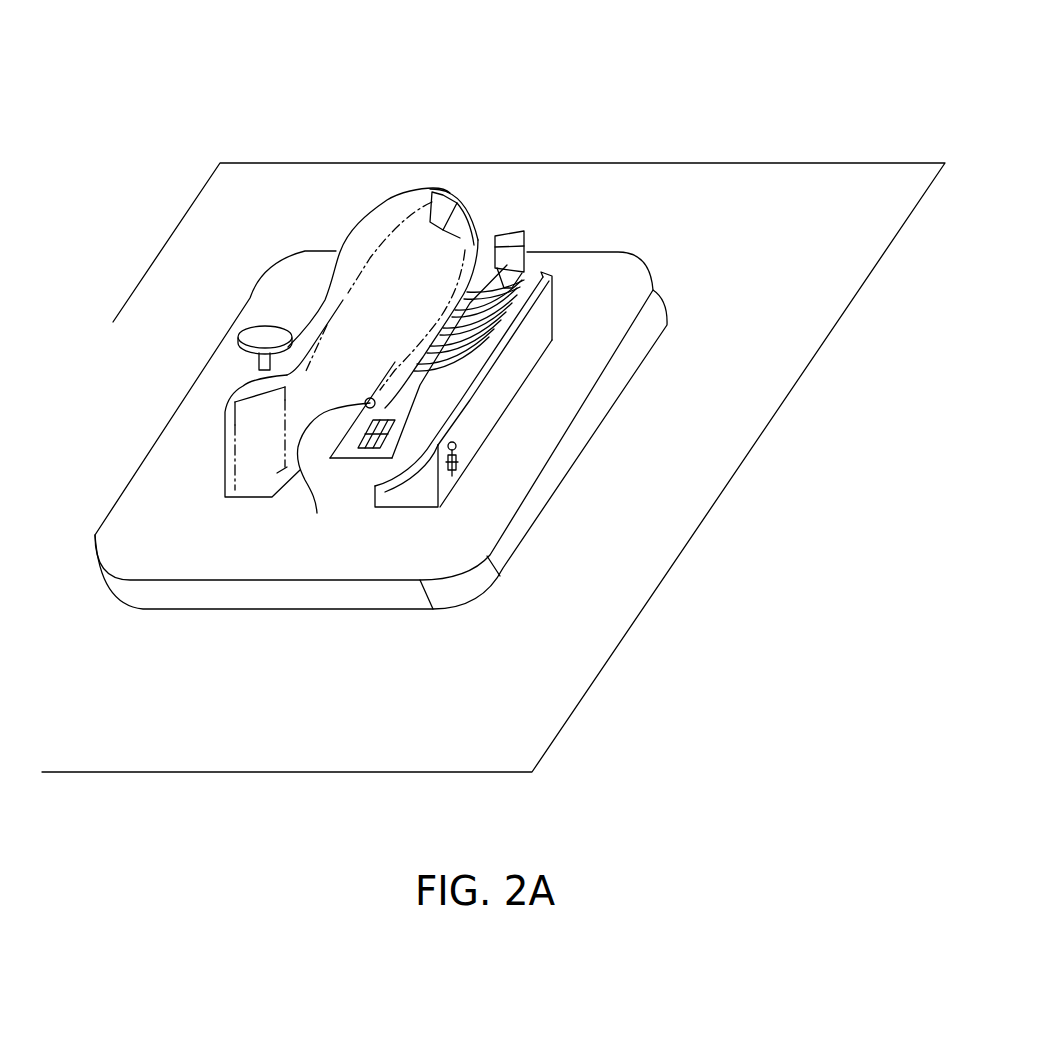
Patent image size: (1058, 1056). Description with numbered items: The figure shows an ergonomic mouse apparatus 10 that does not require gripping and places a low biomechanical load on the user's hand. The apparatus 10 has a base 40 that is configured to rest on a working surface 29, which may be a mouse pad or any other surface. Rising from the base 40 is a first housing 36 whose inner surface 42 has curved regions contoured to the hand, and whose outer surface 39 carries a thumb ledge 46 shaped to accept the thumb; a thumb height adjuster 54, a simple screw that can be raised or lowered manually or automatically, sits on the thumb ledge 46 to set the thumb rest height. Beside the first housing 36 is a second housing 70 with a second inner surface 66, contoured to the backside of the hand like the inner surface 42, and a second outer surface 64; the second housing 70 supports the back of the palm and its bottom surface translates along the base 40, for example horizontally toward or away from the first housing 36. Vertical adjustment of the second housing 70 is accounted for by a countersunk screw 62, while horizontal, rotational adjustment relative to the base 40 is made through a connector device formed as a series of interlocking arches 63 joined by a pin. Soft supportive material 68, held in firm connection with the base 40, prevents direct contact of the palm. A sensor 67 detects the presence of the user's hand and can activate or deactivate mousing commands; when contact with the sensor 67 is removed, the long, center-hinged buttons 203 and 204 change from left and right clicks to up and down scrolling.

The mouse apparatus 10 is at (552, 98).
The working surface 29 is at (571, 610).
The first housing 36 is at (374, 197).
The outer surface 39 is at (436, 191).
The base 40 is at (162, 546).
The inner surface 42 is at (376, 333).
The thumb ledge 46 is at (240, 378).
The thumb height adjuster 54 is at (258, 362).
The countersunk screw 62 is at (482, 464).
The interlocking arches 63 is at (518, 280).
The second outer surface 64 is at (486, 396).
The second inner surface 66 is at (383, 479).
The sensor 67 is at (406, 508).
The soft supportive material 68 is at (389, 417).
The second housing 70 is at (521, 355).
The button 203 is at (449, 198).
The button 204 is at (470, 224).